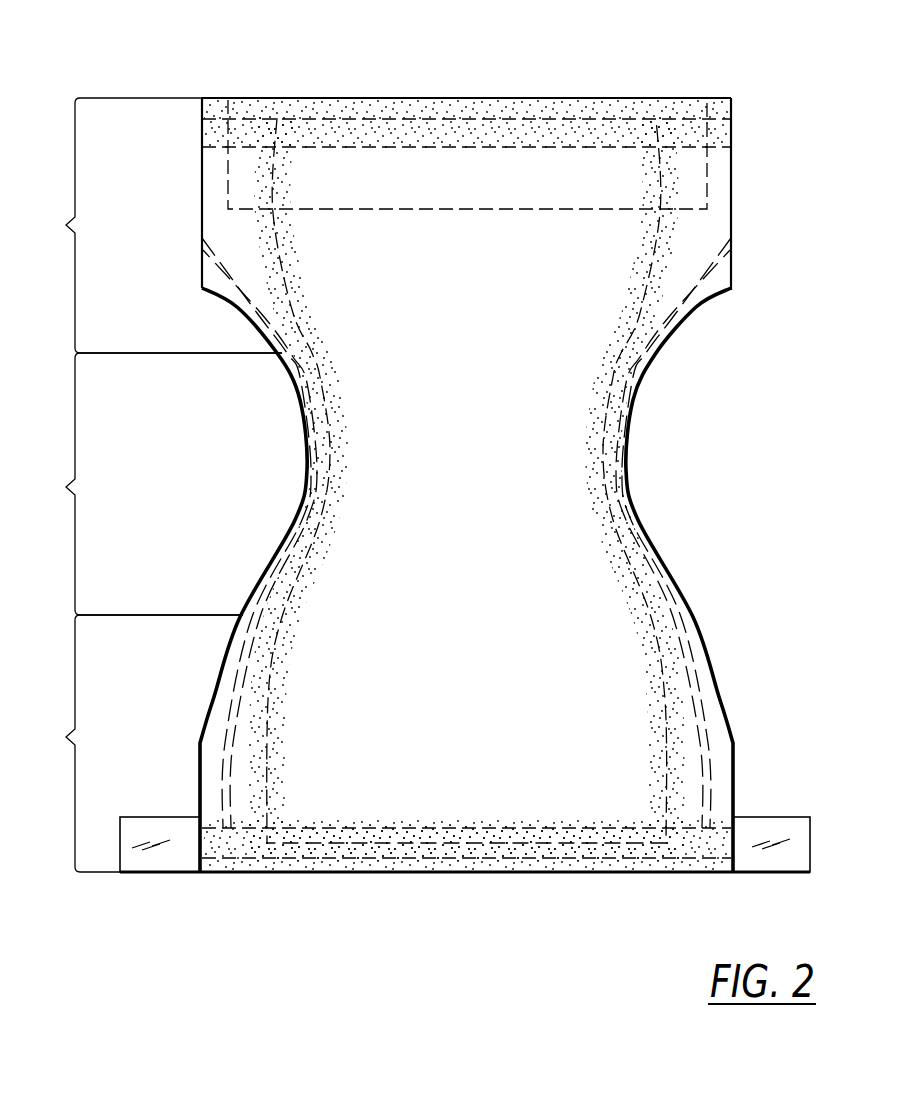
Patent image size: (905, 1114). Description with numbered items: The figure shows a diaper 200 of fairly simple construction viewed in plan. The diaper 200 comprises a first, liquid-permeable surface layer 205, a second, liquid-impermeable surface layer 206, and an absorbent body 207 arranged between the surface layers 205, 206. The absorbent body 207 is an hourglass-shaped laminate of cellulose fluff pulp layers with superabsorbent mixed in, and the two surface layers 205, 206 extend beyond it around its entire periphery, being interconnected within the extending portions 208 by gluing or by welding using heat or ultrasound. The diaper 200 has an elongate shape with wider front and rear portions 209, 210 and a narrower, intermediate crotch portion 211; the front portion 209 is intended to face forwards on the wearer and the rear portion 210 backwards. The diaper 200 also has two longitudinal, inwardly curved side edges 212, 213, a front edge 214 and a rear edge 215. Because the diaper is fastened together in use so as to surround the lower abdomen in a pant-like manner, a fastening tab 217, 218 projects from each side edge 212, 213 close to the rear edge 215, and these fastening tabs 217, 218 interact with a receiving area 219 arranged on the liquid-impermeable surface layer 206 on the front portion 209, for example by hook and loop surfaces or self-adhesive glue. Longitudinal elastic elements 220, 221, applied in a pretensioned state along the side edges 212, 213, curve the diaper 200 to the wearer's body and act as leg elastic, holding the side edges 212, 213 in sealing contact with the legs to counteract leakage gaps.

The diaper 200 is at (668, 65).
The first, liquid-permeable surface layer 205 is at (392, 377).
The second, liquid-impermeable surface layer 206 is at (553, 373).
The absorbent body 207 is at (566, 628).
The extending portions 208 is at (698, 708).
The front portion 209 is at (62, 229).
The rear portion 210 is at (62, 741).
The crotch portion 211 is at (62, 491).
The longitudinal side edge 212 is at (303, 476).
The longitudinal side edge 213 is at (631, 436).
The front edge 214 is at (474, 97).
The rear edge 215 is at (489, 875).
The fastening tab 217 is at (172, 858).
The fastening tab 218 is at (766, 858).
The receiving area 219 is at (375, 175).
The longitudinal elastic element 220 is at (292, 535).
The longitudinal elastic element 221 is at (612, 512).